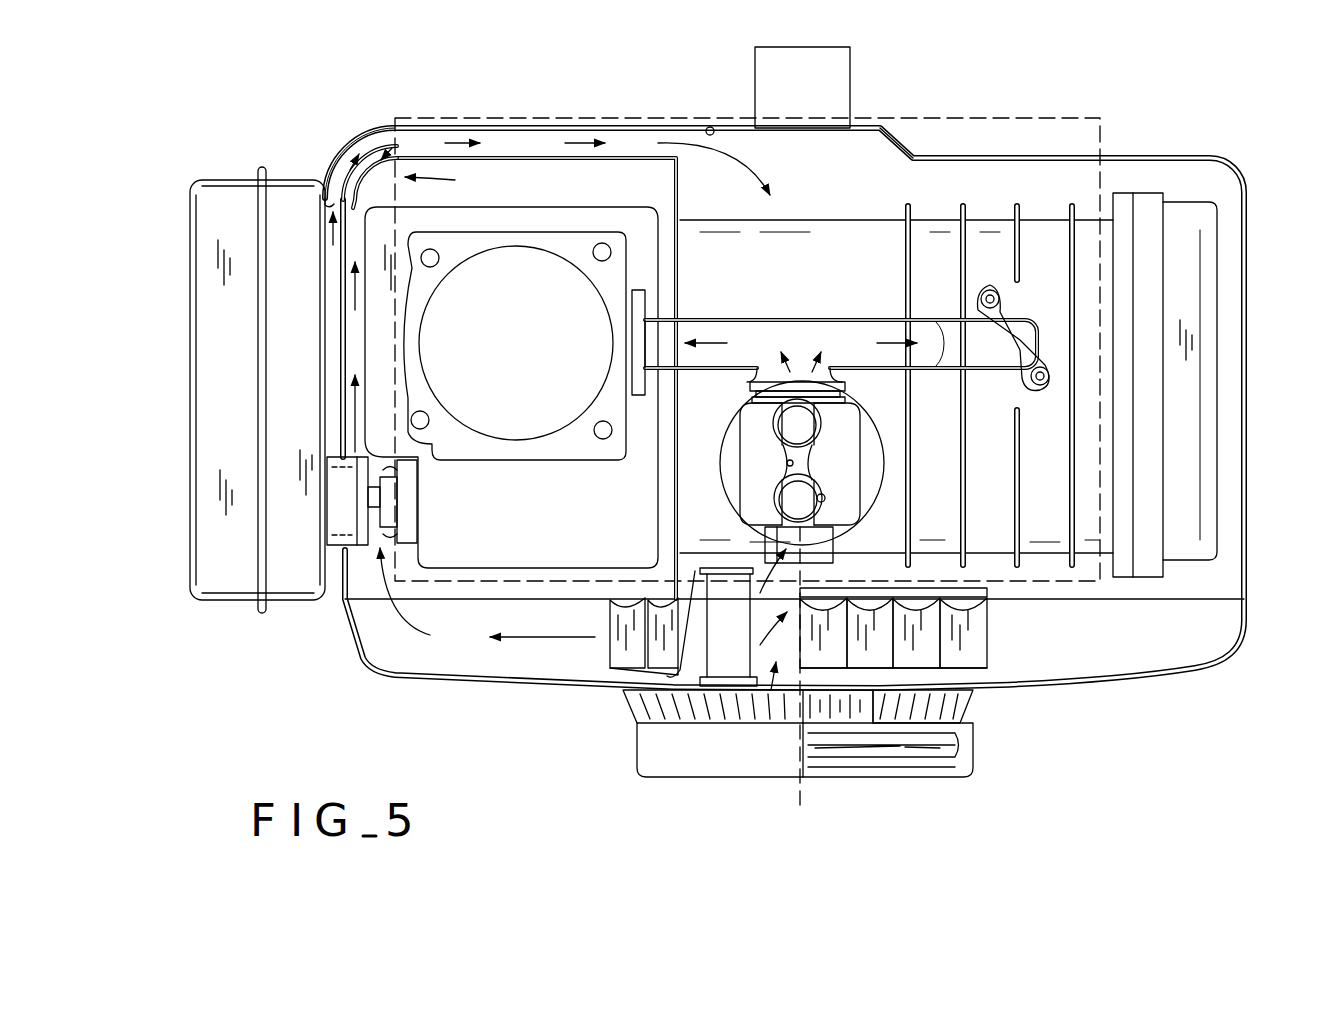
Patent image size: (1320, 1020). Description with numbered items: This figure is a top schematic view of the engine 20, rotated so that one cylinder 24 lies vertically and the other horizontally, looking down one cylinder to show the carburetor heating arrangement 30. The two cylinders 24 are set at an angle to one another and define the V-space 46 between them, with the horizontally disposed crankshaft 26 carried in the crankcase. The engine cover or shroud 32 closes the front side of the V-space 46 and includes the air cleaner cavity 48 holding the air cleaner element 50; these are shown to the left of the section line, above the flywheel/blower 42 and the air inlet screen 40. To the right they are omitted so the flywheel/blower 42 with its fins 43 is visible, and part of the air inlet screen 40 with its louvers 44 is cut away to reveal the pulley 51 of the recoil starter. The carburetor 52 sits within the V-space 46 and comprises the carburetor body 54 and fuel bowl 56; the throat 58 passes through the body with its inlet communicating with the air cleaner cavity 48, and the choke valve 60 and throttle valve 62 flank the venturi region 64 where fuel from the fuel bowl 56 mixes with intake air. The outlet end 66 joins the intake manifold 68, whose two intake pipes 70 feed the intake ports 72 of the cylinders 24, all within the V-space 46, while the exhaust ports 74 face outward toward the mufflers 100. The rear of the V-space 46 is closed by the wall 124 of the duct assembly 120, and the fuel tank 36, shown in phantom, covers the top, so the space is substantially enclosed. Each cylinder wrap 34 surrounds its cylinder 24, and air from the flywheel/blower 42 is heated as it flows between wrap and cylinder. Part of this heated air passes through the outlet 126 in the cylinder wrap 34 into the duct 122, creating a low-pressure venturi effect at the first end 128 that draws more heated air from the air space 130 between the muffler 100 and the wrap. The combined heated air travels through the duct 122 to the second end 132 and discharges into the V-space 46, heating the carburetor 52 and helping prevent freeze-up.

The engine 20 is at (1238, 104).
The engine cylinders 24 is at (831, 327).
The crankshaft 26 is at (789, 93).
The carburetor heating arrangement 30 is at (323, 112).
The engine cover or shroud 32 is at (468, 690).
The cylinder wraps 34 is at (343, 335).
The fuel tank 36 is at (450, 112).
The air inlet screen 40 is at (790, 751).
The flywheel/blower 42 is at (797, 694).
The fins 43 is at (925, 648).
The louvers 44 is at (673, 714).
The V-space 46 is at (868, 232).
The air cleaner cavity 48 is at (774, 665).
The air cleaner element 50 is at (714, 630).
The pulley 51 is at (870, 752).
The carburetor 52 is at (784, 466).
The carburetor body 54 is at (755, 490).
The fuel bowl 56 is at (875, 437).
The throat 58 is at (822, 498).
The choke valve 60 is at (785, 511).
The throttle valve 62 is at (784, 436).
The venturi region 64 is at (765, 462).
The outlet end 66 is at (800, 392).
The intake manifold 68 is at (793, 316).
The intake pipes 70 is at (713, 318).
The intake ports 72 is at (640, 337).
The exhaust ports 74 is at (400, 478).
The muffler 100 is at (200, 210).
The duct assembly 120 is at (571, 112).
The duct 122 is at (424, 128).
The wall 124 is at (872, 128).
The outlet 126 is at (444, 185).
The first end 128 is at (336, 162).
The air space 130 is at (330, 291).
The second end 132 is at (710, 126).